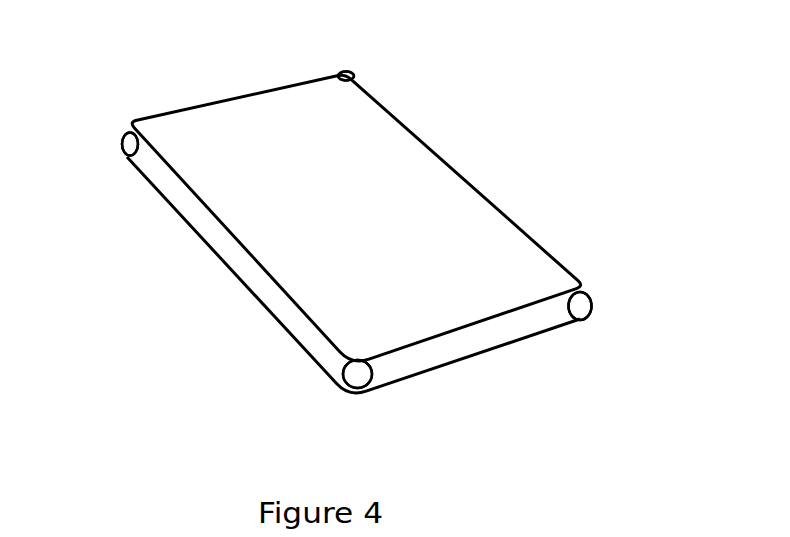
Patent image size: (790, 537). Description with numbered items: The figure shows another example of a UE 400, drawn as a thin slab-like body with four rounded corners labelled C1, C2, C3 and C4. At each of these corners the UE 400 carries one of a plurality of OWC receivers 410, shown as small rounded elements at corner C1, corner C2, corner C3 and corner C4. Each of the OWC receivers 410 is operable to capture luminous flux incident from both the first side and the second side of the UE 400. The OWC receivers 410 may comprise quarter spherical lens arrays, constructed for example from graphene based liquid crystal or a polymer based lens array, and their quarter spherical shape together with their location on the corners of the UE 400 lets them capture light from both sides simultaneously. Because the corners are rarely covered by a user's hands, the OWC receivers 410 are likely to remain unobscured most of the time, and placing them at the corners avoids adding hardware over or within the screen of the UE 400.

The UE 400 is at (436, 152).
The OWC receivers 410 is at (127, 130).
The first corner C1 is at (111, 140).
The second corner C2 is at (369, 72).
The third corner C3 is at (357, 392).
The fourth corner C4 is at (597, 313).